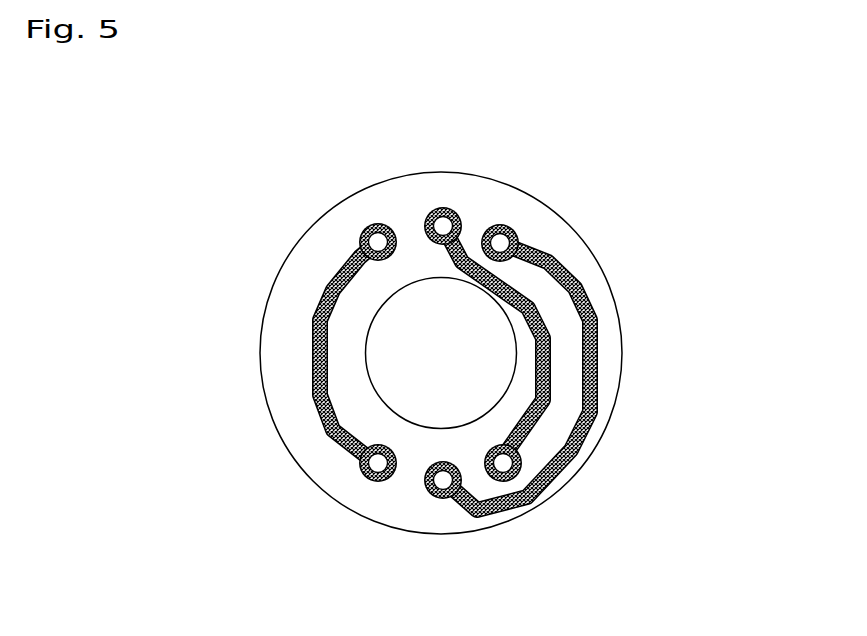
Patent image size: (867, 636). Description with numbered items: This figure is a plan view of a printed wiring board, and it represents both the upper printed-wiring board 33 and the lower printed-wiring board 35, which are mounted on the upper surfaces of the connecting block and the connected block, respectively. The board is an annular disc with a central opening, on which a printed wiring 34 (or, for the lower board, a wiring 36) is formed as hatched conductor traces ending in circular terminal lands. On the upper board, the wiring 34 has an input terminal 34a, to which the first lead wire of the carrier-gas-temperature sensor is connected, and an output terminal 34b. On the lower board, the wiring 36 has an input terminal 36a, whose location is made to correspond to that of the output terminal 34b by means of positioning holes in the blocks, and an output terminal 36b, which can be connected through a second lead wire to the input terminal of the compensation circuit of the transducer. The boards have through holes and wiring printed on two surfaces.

The upper printed-wiring board 33 is at (505, 336).
The lower printed-wiring board 35 is at (560, 240).
The wiring 34 is at (444, 368).
The wiring 36 is at (597, 332).
The input terminal 34a is at (319, 531).
The output terminal 36b is at (364, 477).
The output terminal 34b is at (589, 172).
The input terminal 36a is at (503, 224).